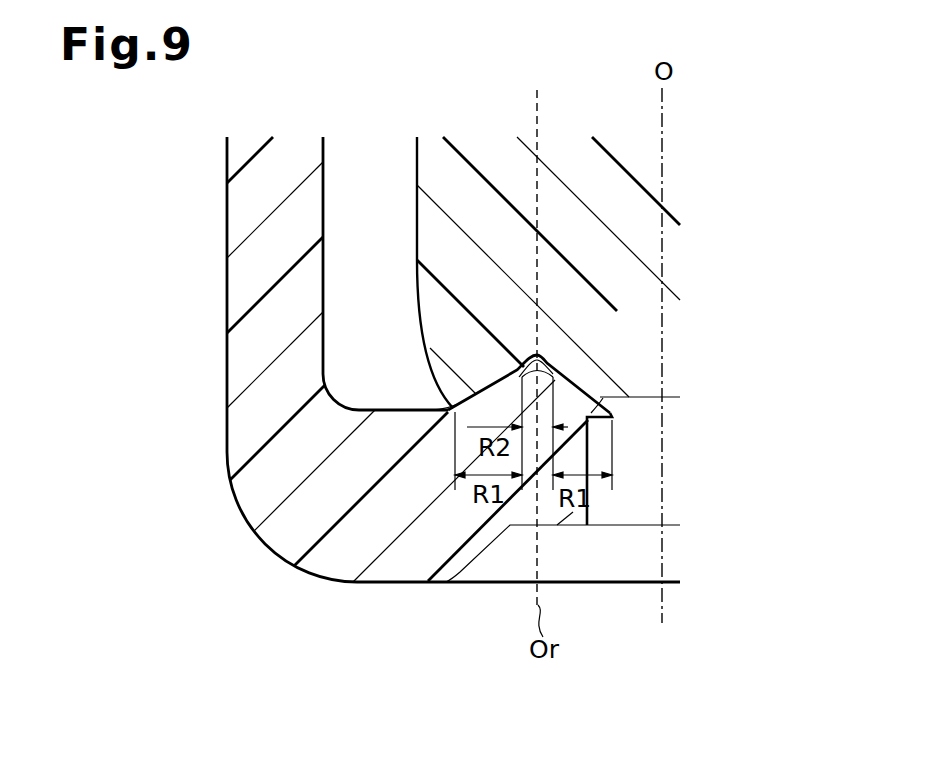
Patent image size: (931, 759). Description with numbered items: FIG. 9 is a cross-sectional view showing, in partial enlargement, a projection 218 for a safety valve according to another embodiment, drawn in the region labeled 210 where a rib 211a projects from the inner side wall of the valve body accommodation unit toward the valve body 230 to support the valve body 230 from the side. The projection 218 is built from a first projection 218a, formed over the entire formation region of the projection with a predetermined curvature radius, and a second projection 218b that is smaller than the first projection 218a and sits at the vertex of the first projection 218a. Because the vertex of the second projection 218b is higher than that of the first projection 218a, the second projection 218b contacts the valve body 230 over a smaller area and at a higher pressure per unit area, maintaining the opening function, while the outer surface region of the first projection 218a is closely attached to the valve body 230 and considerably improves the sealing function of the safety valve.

The seal member 210 is at (228, 295).
The rib 211a is at (363, 150).
The projection 218 is at (636, 313).
The first projection 218a is at (600, 368).
The second projection 218b is at (538, 353).
The valve body 230 is at (648, 243).